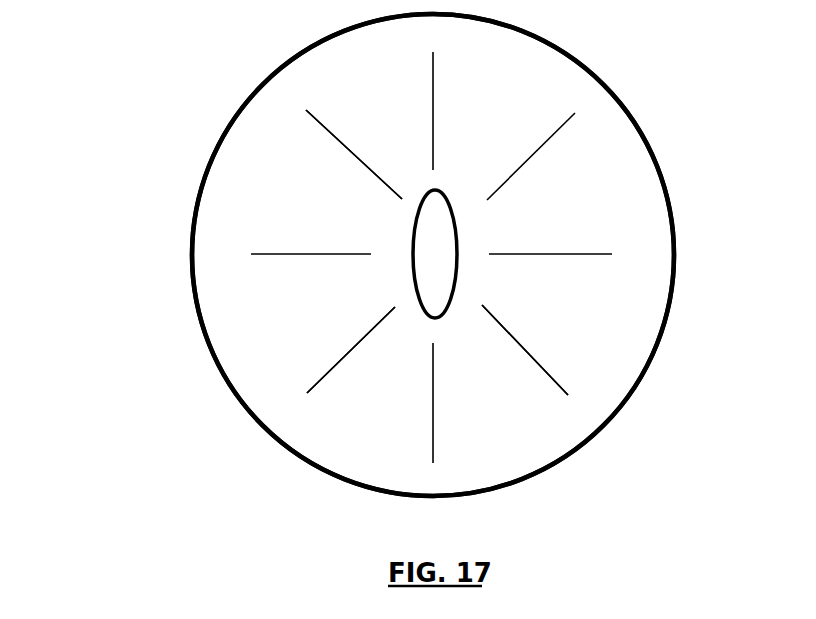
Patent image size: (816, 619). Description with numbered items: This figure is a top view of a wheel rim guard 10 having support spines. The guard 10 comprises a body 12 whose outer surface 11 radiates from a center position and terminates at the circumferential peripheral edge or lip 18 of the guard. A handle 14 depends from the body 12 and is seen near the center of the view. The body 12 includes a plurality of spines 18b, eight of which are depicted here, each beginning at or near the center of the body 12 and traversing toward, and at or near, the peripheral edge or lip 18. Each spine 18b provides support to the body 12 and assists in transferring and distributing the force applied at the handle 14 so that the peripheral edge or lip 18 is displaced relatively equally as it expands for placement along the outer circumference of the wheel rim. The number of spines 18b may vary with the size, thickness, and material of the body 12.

The wheel rim guard 10 is at (148, 108).
The outer surface 11 is at (616, 206).
The body 12 is at (283, 219).
The handle 14 is at (439, 222).
The peripheral edge or lip 18 is at (213, 346).
The spines 18b is at (552, 380).